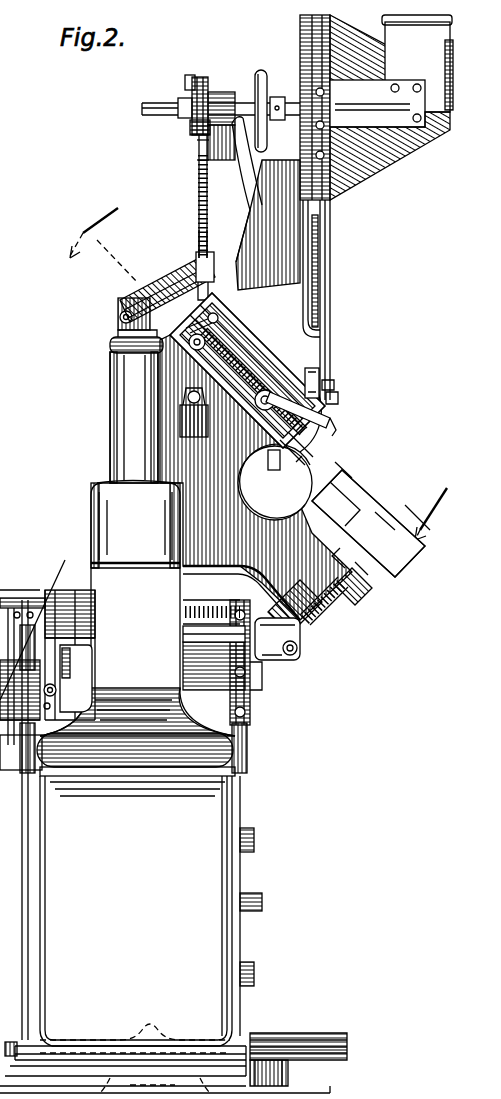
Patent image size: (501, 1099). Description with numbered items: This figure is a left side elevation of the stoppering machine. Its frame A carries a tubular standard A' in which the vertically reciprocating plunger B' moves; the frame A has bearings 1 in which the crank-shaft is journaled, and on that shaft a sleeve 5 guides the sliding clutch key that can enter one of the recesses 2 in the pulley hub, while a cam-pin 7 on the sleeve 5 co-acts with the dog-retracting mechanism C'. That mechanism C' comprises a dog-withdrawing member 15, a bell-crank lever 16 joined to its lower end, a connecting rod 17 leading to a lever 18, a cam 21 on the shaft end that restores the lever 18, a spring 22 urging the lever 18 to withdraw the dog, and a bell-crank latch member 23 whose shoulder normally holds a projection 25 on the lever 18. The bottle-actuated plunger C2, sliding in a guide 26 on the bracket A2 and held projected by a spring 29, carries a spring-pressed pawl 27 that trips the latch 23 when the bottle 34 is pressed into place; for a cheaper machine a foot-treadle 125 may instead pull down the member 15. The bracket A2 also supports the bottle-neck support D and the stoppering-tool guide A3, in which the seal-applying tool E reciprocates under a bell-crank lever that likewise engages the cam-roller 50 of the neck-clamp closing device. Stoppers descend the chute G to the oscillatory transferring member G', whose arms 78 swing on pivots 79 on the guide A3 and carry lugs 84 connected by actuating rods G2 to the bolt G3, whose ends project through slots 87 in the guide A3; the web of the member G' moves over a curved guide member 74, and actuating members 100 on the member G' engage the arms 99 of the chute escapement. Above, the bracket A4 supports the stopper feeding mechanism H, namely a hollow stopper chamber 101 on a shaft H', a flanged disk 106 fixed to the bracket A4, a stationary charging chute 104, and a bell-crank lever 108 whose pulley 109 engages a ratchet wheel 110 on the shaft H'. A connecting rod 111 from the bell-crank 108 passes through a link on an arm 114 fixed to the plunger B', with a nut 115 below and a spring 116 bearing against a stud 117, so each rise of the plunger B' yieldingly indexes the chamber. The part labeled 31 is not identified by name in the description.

The bearings 1 is at (68, 594).
The recesses 2 is at (3, 598).
The sleeve 5 is at (15, 606).
The cam-pin 7 is at (33, 612).
The dog-withdrawing member 15 is at (305, 470).
The bell-crank lever 16 is at (68, 678).
The connecting rod 17 is at (265, 753).
The lever 18 is at (252, 708).
The cam 21 is at (230, 646).
The spring 22 is at (210, 628).
The bell-crank latch member 23 is at (262, 680).
The shoulder or projection 25 is at (428, 528).
The guide 26 is at (290, 615).
The spring-pressed pawl 27 is at (300, 641).
The spring 29 is at (356, 576).
The slide block 31 is at (55, 600).
The bottle 34 is at (431, 500).
The cam-roller 50 is at (130, 404).
The curved guide member 74 is at (300, 440).
The arms 78 is at (330, 428).
The pivots 79 is at (185, 425).
The lugs 84 is at (290, 395).
The slots 87 is at (190, 350).
The actuating arms 99 is at (333, 382).
The actuating members 100 is at (338, 400).
The hollow stopper chamber 101 is at (345, 58).
The stationary charging chute 104 is at (391, 71).
The flanged disk 106 is at (330, 40).
The bell-crank lever 108 is at (203, 77).
The pulley 109 is at (188, 80).
The ratchet wheel 110 is at (195, 126).
The connecting rod 111 is at (200, 147).
The arm 114 is at (200, 292).
The nut 115 is at (200, 265).
The spring 116 is at (201, 193).
The shoulder or stud 117 is at (202, 160).
The foot-treadle 125 is at (318, 1033).
The frame A is at (165, 846).
The tubular standard or plunger-guide A' is at (97, 417).
The bracket A2 is at (195, 487).
The stoppering-tool guide A3 is at (170, 355).
The bracket A4 is at (290, 225).
The vertically reciprocating plunger B' is at (157, 288).
The automatically tripped dog-retracting mechanism C' is at (269, 662).
The bottle-actuated plunger C2 is at (345, 598).
The bottle-neck support D is at (325, 520).
The reciprocating seal-applying tool E is at (425, 510).
The stopper-chute G is at (333, 300).
The oscillatory yoke-shaped stopper-transferring member G' is at (340, 367).
The actuating rods G2 is at (235, 330).
The bolt or stud G3 is at (150, 337).
The rotary stopper chamber H is at (390, 156).
The shaft H' is at (189, 115).